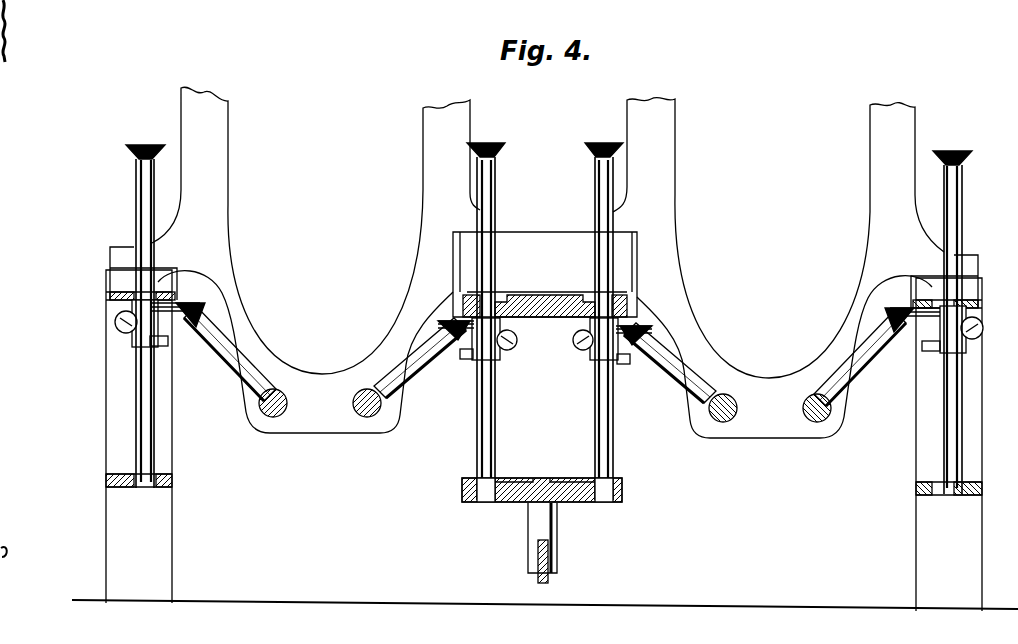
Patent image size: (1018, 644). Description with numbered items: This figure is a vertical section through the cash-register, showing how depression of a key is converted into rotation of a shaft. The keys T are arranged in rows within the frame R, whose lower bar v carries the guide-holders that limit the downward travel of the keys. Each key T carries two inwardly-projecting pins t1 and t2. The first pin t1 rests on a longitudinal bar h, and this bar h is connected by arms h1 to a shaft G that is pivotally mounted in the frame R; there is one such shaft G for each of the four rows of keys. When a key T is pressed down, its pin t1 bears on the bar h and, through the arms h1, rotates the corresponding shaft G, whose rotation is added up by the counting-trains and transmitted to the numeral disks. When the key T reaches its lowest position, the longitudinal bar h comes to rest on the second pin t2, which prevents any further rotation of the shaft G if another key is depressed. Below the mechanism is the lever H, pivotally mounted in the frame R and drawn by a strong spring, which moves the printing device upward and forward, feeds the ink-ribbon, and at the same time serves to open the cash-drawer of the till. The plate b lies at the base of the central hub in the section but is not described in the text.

The key T is at (136, 172).
The frame R is at (414, 253).
The pin t1 is at (216, 296).
The second pin t2 is at (912, 350).
The longitudinal bar h is at (206, 313).
The arm h1 is at (839, 369).
The shaft G is at (352, 403).
The lower bar v is at (106, 481).
The cross plate b is at (505, 480).
The lever H is at (557, 552).